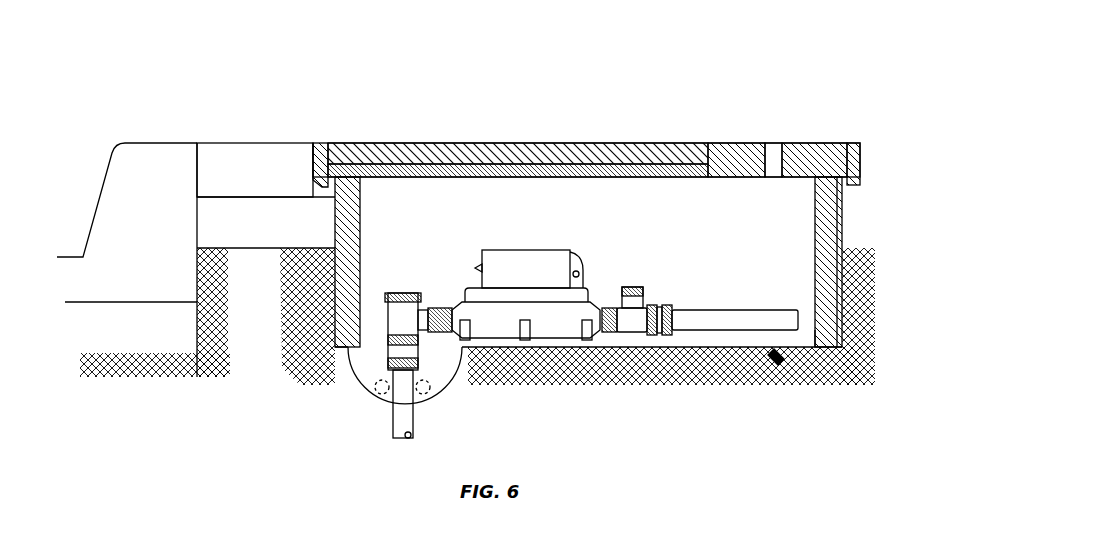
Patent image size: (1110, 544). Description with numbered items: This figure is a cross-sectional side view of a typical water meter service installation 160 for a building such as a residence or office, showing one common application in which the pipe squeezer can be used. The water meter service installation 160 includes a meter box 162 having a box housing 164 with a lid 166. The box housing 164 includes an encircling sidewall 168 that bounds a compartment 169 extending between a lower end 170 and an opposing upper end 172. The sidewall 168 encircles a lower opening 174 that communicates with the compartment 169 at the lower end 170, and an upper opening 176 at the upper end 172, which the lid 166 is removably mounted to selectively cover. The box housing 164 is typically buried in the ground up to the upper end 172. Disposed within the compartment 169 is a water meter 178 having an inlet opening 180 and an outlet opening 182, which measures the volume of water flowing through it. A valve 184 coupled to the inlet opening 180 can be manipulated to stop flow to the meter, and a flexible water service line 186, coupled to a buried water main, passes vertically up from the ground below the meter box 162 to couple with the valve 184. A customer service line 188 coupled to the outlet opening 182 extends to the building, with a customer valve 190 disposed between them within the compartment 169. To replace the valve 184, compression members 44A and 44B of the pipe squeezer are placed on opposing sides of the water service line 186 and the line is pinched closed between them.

The water meter service installation 160 is at (848, 78).
The meter box 162 is at (836, 218).
The box housing 164 is at (836, 286).
The lid 166 is at (404, 161).
The encircling sidewall 168 is at (831, 250).
The compartment 169 is at (739, 196).
The lower end 170 is at (291, 333).
The upper end 172 is at (298, 167).
The lower opening 174 is at (779, 352).
The upper opening 176 is at (331, 160).
The water meter 178 is at (527, 250).
The inlet opening 180 is at (435, 307).
The outlet opening 182 is at (604, 305).
The valve 184 is at (405, 292).
The water service line 186 is at (388, 420).
The customer service line 188 is at (723, 332).
The customer valve 190 is at (645, 300).
The compression member 44A is at (432, 391).
The compression member 44B is at (372, 393).